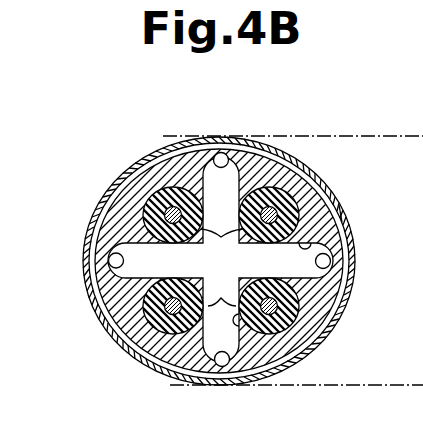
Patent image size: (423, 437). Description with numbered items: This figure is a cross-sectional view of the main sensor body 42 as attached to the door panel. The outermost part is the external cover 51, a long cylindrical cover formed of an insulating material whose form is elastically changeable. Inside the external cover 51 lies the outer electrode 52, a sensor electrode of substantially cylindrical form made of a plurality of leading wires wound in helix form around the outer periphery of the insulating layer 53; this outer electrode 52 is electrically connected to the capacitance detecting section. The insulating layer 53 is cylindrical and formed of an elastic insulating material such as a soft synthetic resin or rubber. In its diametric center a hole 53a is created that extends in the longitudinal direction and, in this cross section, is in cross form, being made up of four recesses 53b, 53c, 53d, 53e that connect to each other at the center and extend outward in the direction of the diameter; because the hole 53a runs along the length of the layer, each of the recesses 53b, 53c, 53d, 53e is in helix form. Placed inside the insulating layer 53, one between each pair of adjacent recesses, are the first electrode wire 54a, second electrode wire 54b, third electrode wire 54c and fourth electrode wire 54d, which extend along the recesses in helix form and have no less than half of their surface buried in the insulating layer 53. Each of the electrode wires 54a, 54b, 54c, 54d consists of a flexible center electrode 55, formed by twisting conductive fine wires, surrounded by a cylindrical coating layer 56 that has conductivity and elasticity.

The main sensor body 42 is at (275, 122).
The external cover 51 is at (158, 158).
The outer electrode 52 is at (98, 211).
The insulating layer 53 is at (100, 305).
The hole 53a is at (340, 214).
The recess 53b is at (222, 152).
The recess 53c is at (333, 261).
The recess 53d is at (223, 368).
The recess 53e is at (110, 261).
The first electrode wire 54a is at (151, 194).
The second electrode wire 54b is at (300, 189).
The third electrode wire 54c is at (318, 330).
The fourth electrode wire 54d is at (150, 331).
The center electrode 55 is at (222, 245).
The coating layer 56 is at (221, 289).